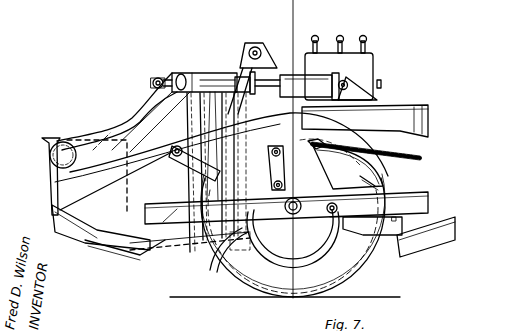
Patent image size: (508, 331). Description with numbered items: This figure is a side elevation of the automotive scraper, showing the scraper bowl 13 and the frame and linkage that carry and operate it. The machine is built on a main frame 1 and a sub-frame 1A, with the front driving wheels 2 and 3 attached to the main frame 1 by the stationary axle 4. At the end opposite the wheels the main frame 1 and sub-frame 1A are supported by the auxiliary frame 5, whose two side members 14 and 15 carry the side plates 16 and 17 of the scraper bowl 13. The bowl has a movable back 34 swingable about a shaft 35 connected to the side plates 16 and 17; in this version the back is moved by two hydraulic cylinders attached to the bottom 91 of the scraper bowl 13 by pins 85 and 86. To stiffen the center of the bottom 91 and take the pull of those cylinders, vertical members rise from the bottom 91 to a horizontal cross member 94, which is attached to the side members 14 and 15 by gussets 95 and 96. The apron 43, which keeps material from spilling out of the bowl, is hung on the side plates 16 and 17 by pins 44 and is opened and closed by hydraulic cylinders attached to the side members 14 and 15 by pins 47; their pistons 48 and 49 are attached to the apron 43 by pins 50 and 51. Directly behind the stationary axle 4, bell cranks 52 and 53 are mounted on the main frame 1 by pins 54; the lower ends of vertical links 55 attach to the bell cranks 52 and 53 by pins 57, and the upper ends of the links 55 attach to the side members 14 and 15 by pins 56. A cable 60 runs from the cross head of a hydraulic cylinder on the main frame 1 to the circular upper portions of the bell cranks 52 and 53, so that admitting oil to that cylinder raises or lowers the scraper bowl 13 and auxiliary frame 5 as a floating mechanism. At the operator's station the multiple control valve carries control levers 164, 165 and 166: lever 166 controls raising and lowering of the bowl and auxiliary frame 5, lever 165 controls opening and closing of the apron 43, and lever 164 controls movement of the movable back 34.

The main frame 1 is at (430, 198).
The sub-frame 1A is at (458, 225).
The front driving wheel 2 is at (293, 231).
The front driving wheel 3 is at (346, 266).
The stationary axle 4 is at (300, 230).
The auxiliary frame 5 is at (417, 123).
The scraper bowl 13 is at (155, 243).
The side member 14 is at (417, 106).
The side member 15 is at (438, 116).
The side plate 16 is at (130, 117).
The side plate 17 is at (128, 122).
The movable back 34 is at (146, 98).
The shaft 35 is at (178, 72).
The apron 43 is at (46, 158).
The pin 44 is at (176, 146).
The pin 47 is at (349, 82).
The piston 48 is at (209, 73).
The piston 49 is at (217, 71).
The pin 50 is at (163, 80).
The pin 51 is at (160, 59).
The bell crank 52 is at (367, 182).
The bell crank 53 is at (389, 181).
The pin 54 is at (338, 212).
The vertical link 55 is at (348, 167).
The pin 56 is at (273, 155).
The pin 57 is at (281, 208).
The cable 60 is at (418, 157).
The pin 85 is at (236, 252).
The pin 86 is at (222, 264).
The bottom 91 is at (214, 258).
The horizontal cross member 94 is at (243, 44).
The gusset 95 is at (300, 34).
The gusset 96 is at (283, 76).
The control lever 164 is at (317, 36).
The control lever 165 is at (341, 37).
The control lever 166 is at (368, 39).